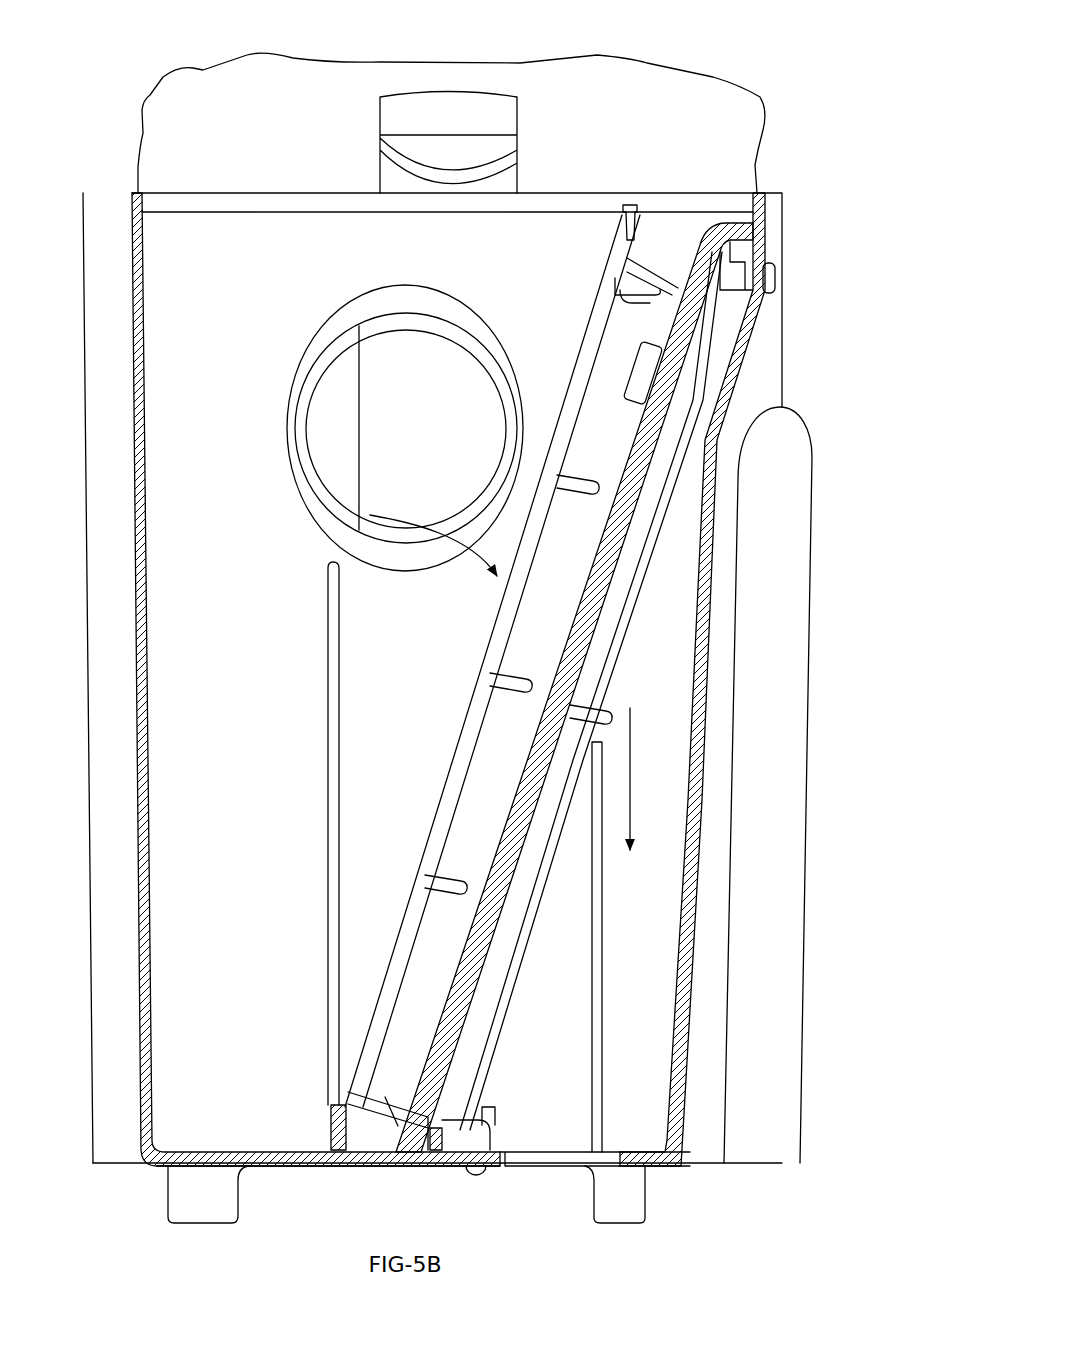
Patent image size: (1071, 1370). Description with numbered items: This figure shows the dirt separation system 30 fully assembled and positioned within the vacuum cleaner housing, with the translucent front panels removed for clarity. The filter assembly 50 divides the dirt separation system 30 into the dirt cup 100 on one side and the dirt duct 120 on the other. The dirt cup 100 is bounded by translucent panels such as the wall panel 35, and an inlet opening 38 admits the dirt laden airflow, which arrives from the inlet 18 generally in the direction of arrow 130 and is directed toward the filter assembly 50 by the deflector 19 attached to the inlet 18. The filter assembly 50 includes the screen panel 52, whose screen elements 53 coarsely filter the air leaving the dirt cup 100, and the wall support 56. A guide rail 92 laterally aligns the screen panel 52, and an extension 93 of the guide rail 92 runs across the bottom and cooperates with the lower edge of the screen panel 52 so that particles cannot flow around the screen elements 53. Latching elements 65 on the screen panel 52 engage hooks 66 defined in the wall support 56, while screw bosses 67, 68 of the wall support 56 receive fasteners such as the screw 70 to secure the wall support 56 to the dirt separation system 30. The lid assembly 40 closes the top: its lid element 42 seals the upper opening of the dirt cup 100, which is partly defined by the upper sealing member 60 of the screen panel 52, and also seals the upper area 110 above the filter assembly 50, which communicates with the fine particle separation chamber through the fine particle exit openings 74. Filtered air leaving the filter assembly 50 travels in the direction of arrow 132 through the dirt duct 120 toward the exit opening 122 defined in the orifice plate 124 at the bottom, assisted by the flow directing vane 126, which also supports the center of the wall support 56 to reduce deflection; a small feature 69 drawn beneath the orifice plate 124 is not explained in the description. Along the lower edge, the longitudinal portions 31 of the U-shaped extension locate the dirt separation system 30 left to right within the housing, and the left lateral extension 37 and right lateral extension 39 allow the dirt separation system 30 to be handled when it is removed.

The dirt separation system 30 is at (823, 196).
The longitudinal portions 31 is at (188, 1223).
The wall panel 35 is at (143, 823).
The left lateral extension 37 is at (117, 785).
The inlet opening 38 is at (322, 543).
The right lateral extension 39 is at (787, 431).
The lid assembly 40 is at (765, 152).
The lid element 42 is at (274, 202).
The inlet 18 is at (467, 358).
The deflector 19 is at (318, 425).
The filter assembly 50 is at (456, 740).
The screen panel 52 is at (447, 920).
The screen elements 53 is at (435, 818).
The wall support 56 is at (607, 633).
The upper sealing member 60 is at (627, 220).
The latching elements 65 is at (628, 382).
The hooks 66 is at (652, 352).
The screw boss 67 is at (492, 1117).
The screw boss 68 is at (745, 273).
The drain notch 69 is at (482, 1173).
The screw 70 is at (768, 285).
The fine particle exit openings 74 is at (655, 300).
The guide rail 92 is at (333, 847).
The extension of the guide rail 93 is at (332, 1125).
The dirt cup 100 is at (228, 753).
The upper area 110 is at (685, 241).
The dirt duct 120 is at (622, 928).
The exit opening 122 is at (525, 1160).
The orifice plate 124 is at (550, 1167).
The flow directing vane 126 is at (593, 987).
The arrow 130 is at (430, 527).
The arrow 132 is at (632, 750).